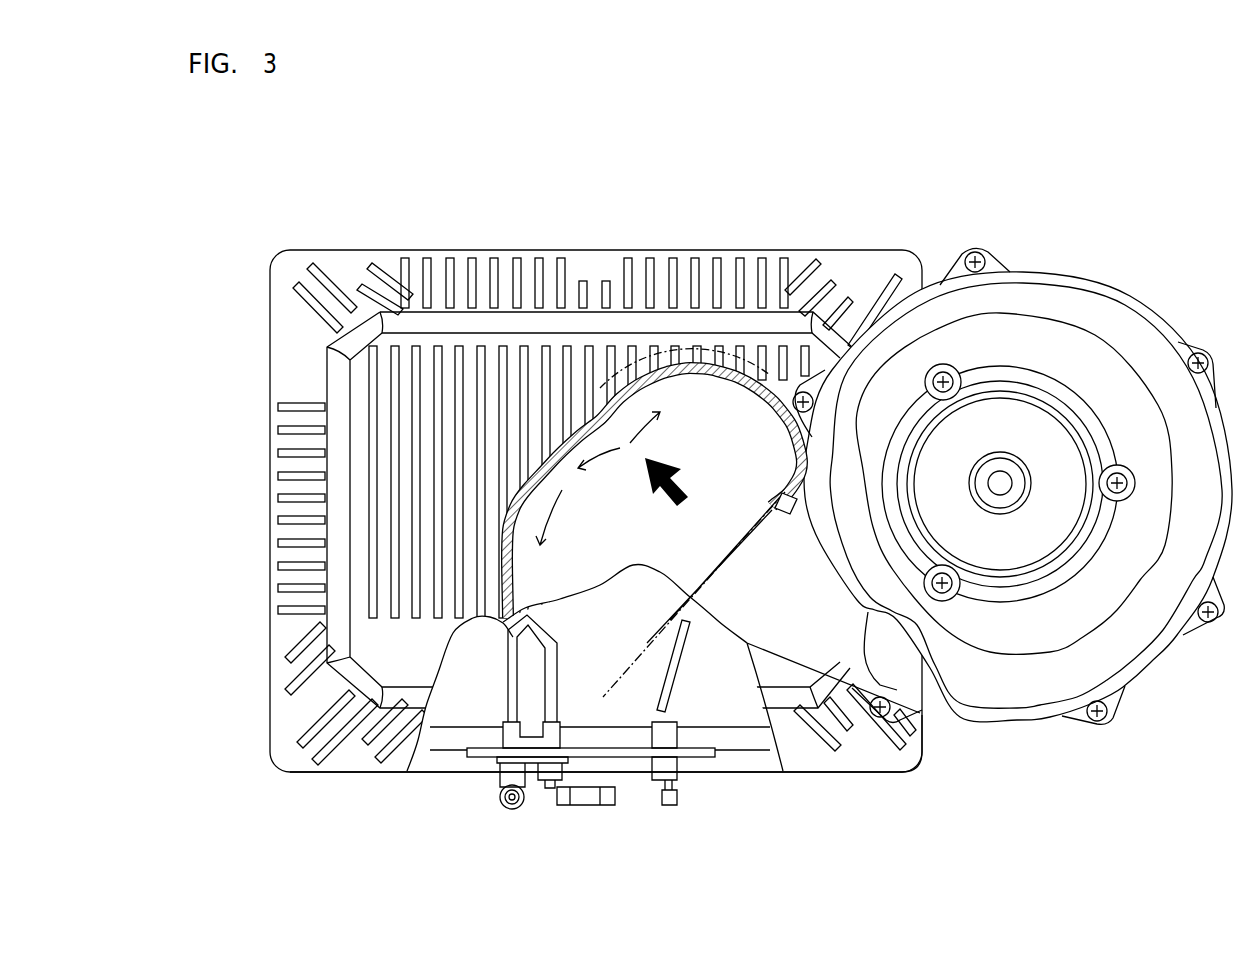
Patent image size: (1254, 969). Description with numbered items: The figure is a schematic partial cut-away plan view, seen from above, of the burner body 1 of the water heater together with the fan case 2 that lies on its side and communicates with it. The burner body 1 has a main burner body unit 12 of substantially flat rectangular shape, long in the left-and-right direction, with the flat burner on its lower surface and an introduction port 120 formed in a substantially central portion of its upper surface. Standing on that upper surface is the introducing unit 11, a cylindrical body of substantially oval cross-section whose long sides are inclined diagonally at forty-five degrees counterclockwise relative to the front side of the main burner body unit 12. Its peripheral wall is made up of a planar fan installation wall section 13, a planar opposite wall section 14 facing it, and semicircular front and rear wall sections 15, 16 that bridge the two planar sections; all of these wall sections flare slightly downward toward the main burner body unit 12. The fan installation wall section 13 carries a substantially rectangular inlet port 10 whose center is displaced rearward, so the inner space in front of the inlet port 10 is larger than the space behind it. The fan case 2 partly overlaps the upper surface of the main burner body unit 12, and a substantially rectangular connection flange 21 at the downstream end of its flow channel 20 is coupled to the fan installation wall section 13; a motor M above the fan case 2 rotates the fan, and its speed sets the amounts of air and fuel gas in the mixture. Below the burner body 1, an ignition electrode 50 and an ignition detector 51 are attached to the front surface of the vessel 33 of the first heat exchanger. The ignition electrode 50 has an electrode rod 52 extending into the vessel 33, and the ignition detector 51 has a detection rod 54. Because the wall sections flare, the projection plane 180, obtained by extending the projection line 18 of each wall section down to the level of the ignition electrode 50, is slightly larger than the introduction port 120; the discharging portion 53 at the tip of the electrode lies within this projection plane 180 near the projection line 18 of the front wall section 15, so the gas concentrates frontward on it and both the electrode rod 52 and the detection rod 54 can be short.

The burner body 1 is at (538, 188).
The fan case 2 is at (1018, 725).
The inlet port 10 is at (760, 512).
The introducing unit 11 is at (600, 398).
The main burner body unit 12 is at (447, 250).
The fan installation wall section 13 is at (777, 510).
The opposite wall section 14 is at (532, 480).
The front wall section 15 is at (533, 655).
The rear wall section 16 is at (735, 374).
The projection line 18 is at (565, 435).
The flow channel 20 is at (887, 630).
The connection flange 21 is at (722, 570).
The vessel 33 is at (738, 752).
The ignition electrode 50 is at (550, 807).
The ignition detector 51 is at (667, 808).
The electrode rod 52 is at (527, 637).
The discharging portion 53 is at (528, 636).
The detection rod 54 is at (655, 645).
The introduction port 120 is at (707, 363).
The projection plane 180 is at (658, 355).
The motor M is at (1008, 418).